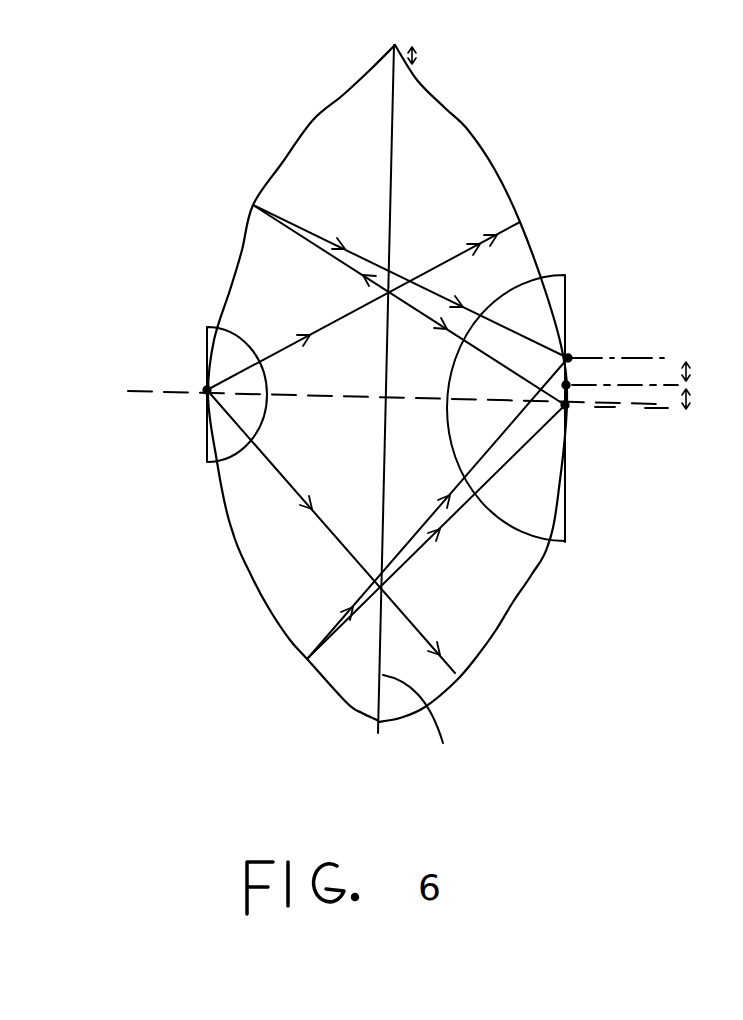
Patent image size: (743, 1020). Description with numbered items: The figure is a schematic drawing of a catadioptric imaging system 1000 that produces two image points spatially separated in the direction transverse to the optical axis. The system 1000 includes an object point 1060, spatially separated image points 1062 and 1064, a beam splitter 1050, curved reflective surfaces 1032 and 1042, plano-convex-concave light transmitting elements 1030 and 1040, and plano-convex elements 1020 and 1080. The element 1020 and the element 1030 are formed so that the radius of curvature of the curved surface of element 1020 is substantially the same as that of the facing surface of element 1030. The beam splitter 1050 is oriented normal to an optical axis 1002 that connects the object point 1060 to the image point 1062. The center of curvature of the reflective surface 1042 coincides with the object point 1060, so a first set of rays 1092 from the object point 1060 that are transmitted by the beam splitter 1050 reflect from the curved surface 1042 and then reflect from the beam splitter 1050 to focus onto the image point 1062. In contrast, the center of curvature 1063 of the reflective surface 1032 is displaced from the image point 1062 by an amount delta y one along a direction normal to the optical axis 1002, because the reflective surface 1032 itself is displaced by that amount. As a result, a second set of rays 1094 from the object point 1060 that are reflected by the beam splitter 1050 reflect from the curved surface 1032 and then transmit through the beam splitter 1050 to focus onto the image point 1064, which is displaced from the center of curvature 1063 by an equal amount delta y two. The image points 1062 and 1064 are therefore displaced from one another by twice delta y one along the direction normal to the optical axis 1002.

The catadioptric imaging system 1000 is at (583, 75).
The optical axis 1002 is at (134, 395).
The plano-convex element 1020 is at (205, 438).
The plano-convex-concave light transmitting element 1030 is at (306, 636).
The curved reflective surface 1032 is at (234, 529).
The plano-convex-concave light transmitting element 1040 is at (458, 645).
The curved reflective surface 1042 is at (513, 603).
The beam splitter 1050 is at (434, 729).
The object point 1060 is at (205, 388).
The image point 1062 is at (572, 411).
The center of curvature 1063 is at (570, 385).
The image point 1064 is at (572, 356).
The plano-convex element 1080 is at (548, 485).
The first set of rays 1092 is at (445, 316).
The second set of rays 1094 is at (442, 293).